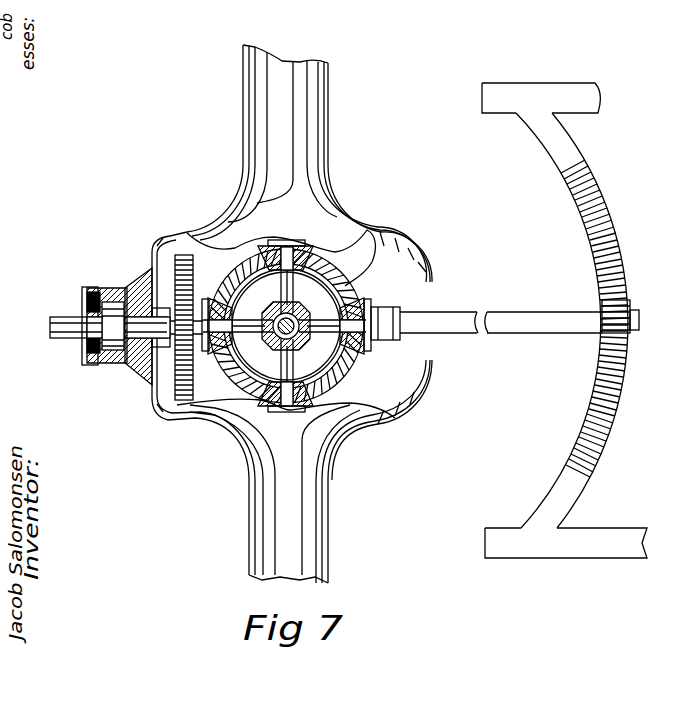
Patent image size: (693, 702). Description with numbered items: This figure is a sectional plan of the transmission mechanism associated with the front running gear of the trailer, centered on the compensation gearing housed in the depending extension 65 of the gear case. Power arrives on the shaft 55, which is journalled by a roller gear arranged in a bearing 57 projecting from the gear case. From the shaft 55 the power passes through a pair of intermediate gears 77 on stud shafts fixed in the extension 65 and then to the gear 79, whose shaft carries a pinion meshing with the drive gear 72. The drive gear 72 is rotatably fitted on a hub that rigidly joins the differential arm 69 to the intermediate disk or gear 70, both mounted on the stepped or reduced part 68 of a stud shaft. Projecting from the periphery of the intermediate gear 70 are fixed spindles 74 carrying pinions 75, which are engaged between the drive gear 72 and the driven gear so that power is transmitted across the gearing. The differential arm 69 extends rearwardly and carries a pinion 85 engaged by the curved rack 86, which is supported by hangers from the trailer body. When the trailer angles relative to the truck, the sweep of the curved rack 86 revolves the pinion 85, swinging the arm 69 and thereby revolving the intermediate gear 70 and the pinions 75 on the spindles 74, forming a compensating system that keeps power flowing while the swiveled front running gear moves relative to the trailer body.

The shaft 55 is at (78, 338).
The bearing 57 is at (117, 292).
The depending extension 65 is at (340, 435).
The reduced part of stud shaft 68 is at (345, 351).
The differential arm 69 is at (500, 334).
The intermediate disk or gear 70 is at (405, 392).
The drive gear 72 is at (399, 416).
The fixed spindles 74 is at (210, 380).
The pinions 75 is at (270, 413).
The intermediate gears 77 is at (152, 378).
The gear 79 is at (183, 256).
The pinion 85 is at (632, 306).
The curved rack 86 is at (620, 237).